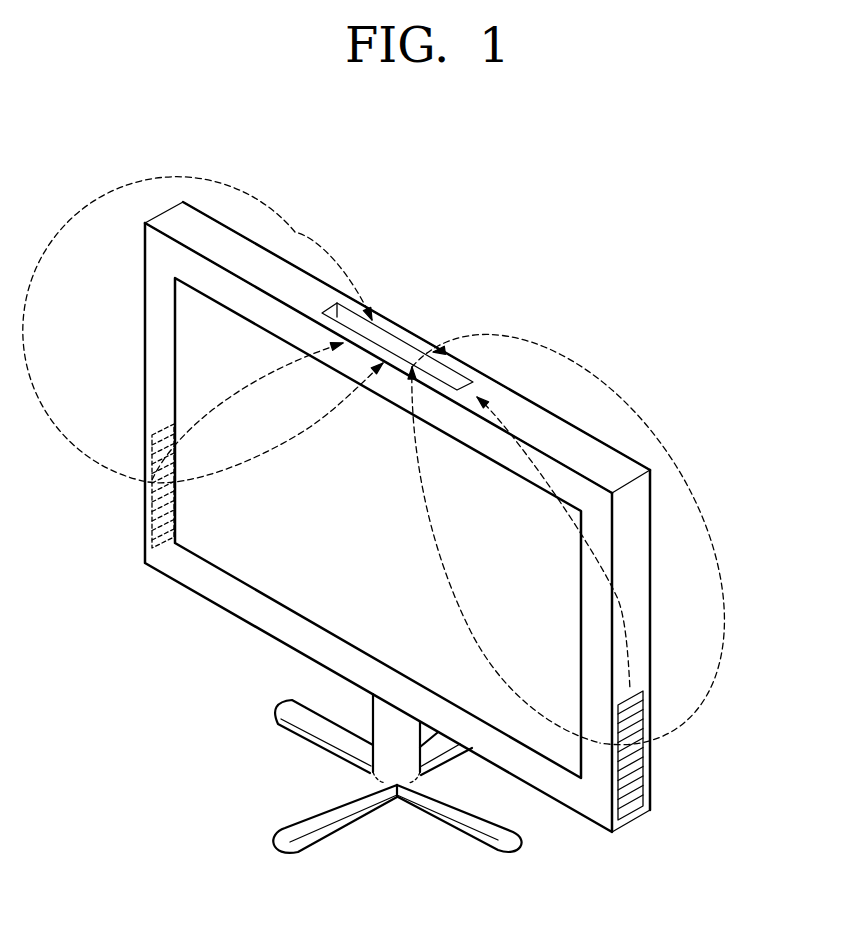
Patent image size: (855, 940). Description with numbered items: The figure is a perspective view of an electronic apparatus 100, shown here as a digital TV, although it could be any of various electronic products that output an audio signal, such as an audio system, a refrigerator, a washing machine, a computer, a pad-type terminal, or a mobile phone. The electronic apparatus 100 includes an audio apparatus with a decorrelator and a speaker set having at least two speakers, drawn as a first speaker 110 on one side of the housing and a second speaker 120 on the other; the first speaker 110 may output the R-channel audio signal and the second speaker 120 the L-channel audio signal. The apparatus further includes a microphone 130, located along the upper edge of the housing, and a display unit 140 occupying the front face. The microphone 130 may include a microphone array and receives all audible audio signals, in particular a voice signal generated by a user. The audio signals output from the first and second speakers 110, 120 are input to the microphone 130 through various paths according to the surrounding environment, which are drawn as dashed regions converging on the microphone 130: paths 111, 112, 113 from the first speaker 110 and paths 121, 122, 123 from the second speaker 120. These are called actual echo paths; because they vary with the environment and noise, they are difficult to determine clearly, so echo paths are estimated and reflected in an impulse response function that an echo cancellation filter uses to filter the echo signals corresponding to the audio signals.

The electronic apparatus 100 is at (672, 282).
The first speaker 110 is at (643, 773).
The actual echo path 111 is at (698, 447).
The actual echo path 112 is at (592, 548).
The actual echo path 113 is at (440, 575).
The second speaker 120 is at (167, 542).
The actual echo path 121 is at (269, 213).
The actual echo path 122 is at (243, 383).
The actual echo path 123 is at (307, 430).
The microphone 130 is at (407, 331).
The display unit 140 is at (518, 473).